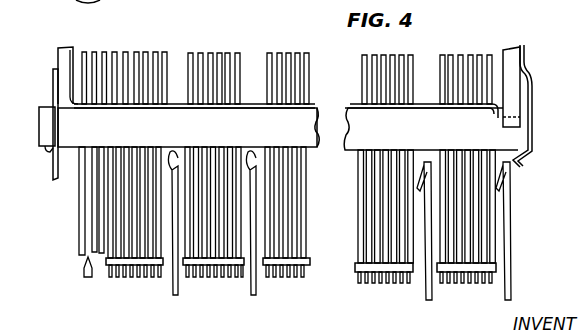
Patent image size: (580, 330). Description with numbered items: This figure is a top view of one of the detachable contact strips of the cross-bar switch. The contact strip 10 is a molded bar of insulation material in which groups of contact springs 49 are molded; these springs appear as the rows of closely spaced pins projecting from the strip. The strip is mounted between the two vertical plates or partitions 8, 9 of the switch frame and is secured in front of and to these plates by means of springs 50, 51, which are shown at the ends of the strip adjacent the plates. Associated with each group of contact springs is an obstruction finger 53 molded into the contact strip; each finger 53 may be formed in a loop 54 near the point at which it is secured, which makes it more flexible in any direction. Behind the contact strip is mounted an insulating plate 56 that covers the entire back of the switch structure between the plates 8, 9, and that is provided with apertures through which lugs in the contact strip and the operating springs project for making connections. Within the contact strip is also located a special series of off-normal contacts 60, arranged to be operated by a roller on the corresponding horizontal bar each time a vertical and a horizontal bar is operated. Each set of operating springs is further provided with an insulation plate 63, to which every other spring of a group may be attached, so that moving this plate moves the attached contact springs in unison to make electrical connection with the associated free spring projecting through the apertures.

The vertical plate 8 is at (65, 56).
The vertical plate 9 is at (508, 53).
The contact strip 10 is at (505, 146).
The contact springs 49 is at (205, 80).
The spring 50 is at (52, 172).
The spring 51 is at (520, 119).
The obstruction finger 53 is at (178, 287).
The loop 54 is at (170, 177).
The insulating plate 56 is at (250, 107).
The off-normal contacts 60 is at (87, 214).
The insulation plate 63 is at (105, 259).